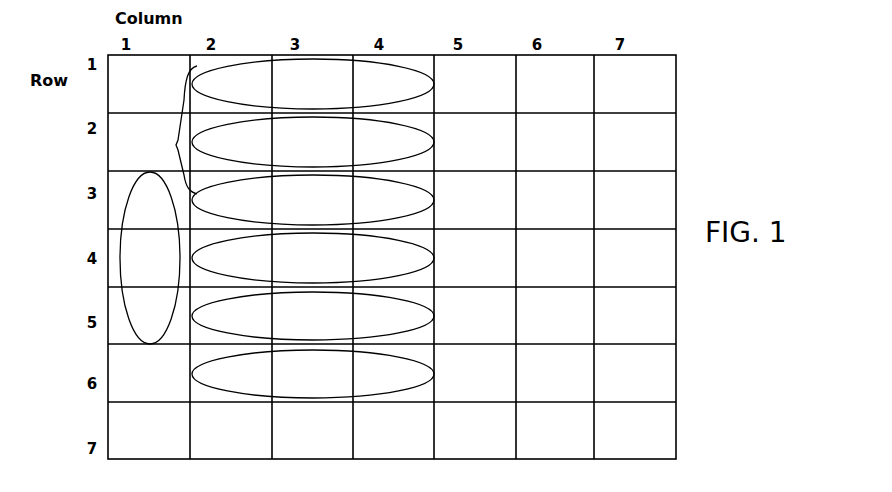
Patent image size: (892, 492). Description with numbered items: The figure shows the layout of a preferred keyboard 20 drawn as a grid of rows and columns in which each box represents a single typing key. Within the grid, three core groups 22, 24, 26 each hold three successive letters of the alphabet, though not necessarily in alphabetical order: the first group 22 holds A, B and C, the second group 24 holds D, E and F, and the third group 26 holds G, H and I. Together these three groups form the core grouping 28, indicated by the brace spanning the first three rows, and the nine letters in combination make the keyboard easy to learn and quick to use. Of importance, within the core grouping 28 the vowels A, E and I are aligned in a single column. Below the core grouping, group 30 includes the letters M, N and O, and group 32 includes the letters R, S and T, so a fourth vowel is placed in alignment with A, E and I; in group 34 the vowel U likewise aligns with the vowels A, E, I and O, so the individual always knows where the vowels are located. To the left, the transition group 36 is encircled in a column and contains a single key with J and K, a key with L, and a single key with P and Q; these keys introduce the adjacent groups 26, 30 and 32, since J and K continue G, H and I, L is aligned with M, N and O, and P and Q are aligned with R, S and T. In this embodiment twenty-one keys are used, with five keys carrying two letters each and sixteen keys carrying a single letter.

The keyboard 20 is at (696, 146).
The first core group 22 is at (413, 75).
The second core group 24 is at (418, 144).
The third core group 26 is at (418, 200).
The core grouping 28 is at (176, 143).
The group MNO 30 is at (418, 257).
The group RST 32 is at (418, 313).
The group with vowel U 34 is at (418, 374).
The transition group 36 is at (142, 193).